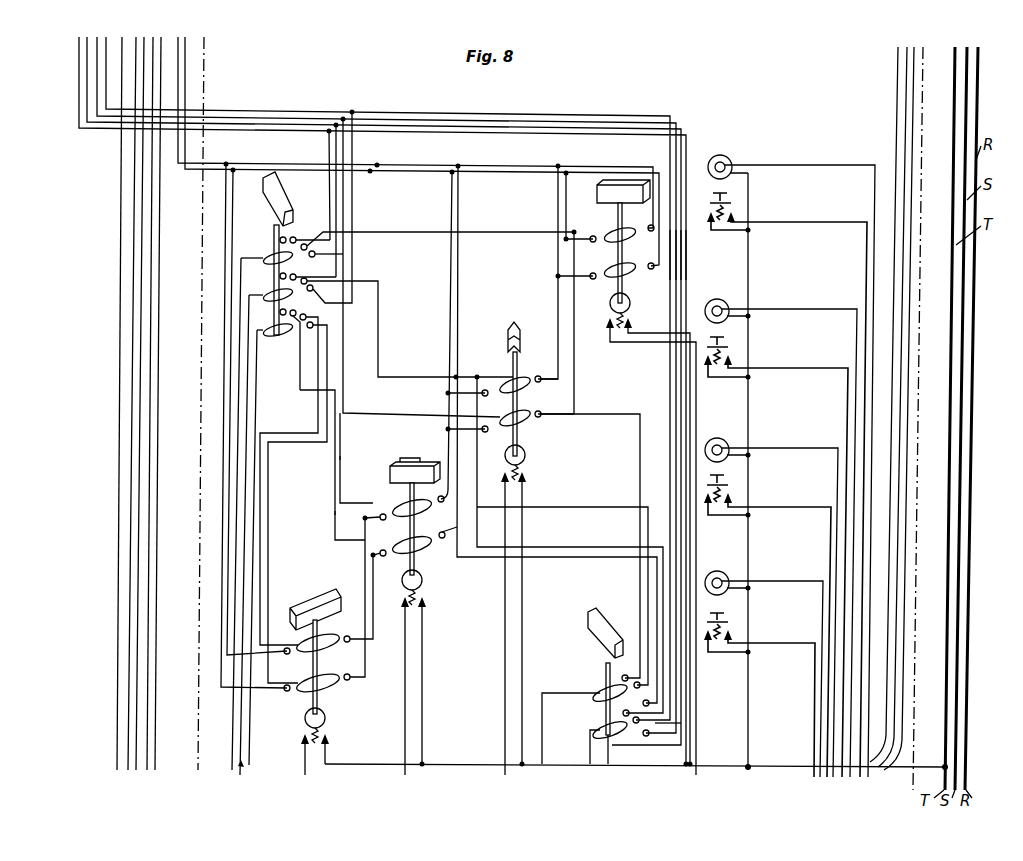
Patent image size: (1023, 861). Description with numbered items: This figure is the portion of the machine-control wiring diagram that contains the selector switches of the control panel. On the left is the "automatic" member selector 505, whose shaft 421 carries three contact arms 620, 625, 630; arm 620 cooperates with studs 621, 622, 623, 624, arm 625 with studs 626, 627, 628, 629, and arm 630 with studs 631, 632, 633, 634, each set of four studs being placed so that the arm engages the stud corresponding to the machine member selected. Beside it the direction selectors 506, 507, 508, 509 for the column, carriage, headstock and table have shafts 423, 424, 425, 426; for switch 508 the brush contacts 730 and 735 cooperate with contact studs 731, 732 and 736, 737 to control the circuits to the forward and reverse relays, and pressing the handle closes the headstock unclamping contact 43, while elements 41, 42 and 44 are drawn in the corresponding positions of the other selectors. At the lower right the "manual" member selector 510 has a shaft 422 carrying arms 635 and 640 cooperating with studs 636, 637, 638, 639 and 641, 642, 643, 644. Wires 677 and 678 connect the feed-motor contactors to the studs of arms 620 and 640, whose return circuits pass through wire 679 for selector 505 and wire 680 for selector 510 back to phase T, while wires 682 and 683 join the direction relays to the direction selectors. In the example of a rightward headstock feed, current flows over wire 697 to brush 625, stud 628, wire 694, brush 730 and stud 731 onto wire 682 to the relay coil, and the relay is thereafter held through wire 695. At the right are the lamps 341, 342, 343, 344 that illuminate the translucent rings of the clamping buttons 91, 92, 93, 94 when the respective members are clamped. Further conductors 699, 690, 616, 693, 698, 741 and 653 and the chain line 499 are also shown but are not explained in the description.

The wire 695 is at (122, 42).
The conductor 699 is at (154, 42).
The conductor 690 is at (162, 42).
The wire 683 is at (181, 44).
The wire 682 is at (186, 60).
The conductors 616 is at (106, 76).
The wire 677 is at (352, 158).
The wire 678 is at (406, 133).
The dividing line 499 is at (200, 487).
The wire 679 is at (222, 430).
The conductor 693 is at (236, 375).
The wire 697 is at (243, 408).
The wire 694 is at (339, 458).
The conductor 698 is at (334, 513).
The member selector 505 is at (287, 198).
The shaft 421 is at (274, 226).
The contact arm 620 is at (262, 256).
The contact arm 625 is at (262, 293).
The contact arm 630 is at (262, 328).
The contact stud 621 is at (286, 238).
The contact stud 622 is at (296, 238).
The contact stud 623 is at (308, 245).
The contact stud 624 is at (316, 253).
The contact stud 626 is at (280, 275).
The contact stud 627 is at (297, 276).
The contact stud 628 is at (360, 281).
The contact stud 629 is at (310, 291).
The contact stud 631 is at (282, 316).
The contact stud 632 is at (292, 317).
The contact stud 633 is at (303, 321).
The contact stud 634 is at (330, 325).
The direction selector 506 is at (622, 183).
The shaft 423 is at (618, 216).
The spring return 41 is at (628, 314).
The direction selector 507 is at (520, 330).
The shaft 424 is at (518, 440).
The spring return 42 is at (526, 470).
The direction selector 508 is at (412, 466).
The shaft 425 is at (414, 528).
The headstock unclamping contact 43 is at (428, 604).
The brush contact 730 is at (402, 506).
The brush contact 735 is at (430, 548).
The contact stud 731 is at (380, 520).
The contact stud 732 is at (445, 497).
The contact stud 736 is at (380, 557).
The contact stud 737 is at (446, 530).
The conductor 741 is at (570, 511).
The direction selector 509 is at (306, 600).
The shaft 426 is at (320, 700).
The spring return 44 is at (330, 732).
The member selector 510 is at (603, 624).
The shaft 422 is at (606, 668).
The contact arm 635 is at (598, 690).
The contact arm 640 is at (598, 735).
The contact stud 639 is at (622, 676).
The contact stud 637 is at (640, 685).
The contact stud 638 is at (643, 703).
The contact stud 636 is at (622, 714).
The contact stud 644 is at (634, 724).
The contact stud 641 is at (647, 736).
The contact stud 642 is at (676, 722).
The contact stud 643 is at (618, 760).
The wire 680 is at (590, 765).
The lamp 341 is at (791, 457).
The lamp 342 is at (781, 529).
The lamp 343 is at (771, 599).
The lamp 344 is at (764, 666).
The clamping button 91 is at (787, 480).
The clamping button 92 is at (776, 553).
The clamping button 93 is at (767, 622).
The clamping button 94 is at (759, 690).
The conductors 653 is at (914, 118).